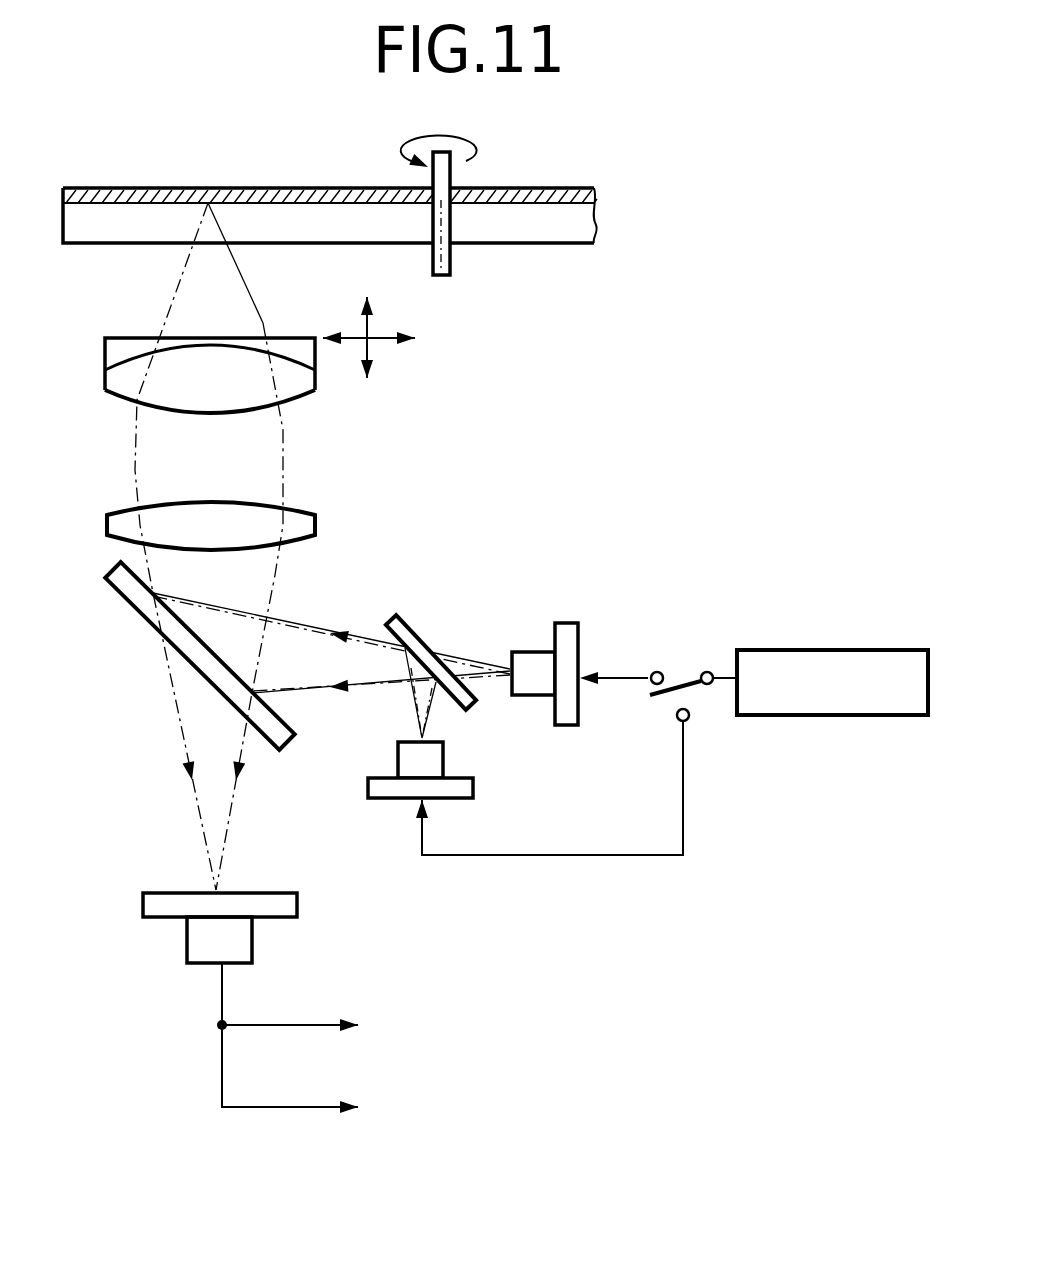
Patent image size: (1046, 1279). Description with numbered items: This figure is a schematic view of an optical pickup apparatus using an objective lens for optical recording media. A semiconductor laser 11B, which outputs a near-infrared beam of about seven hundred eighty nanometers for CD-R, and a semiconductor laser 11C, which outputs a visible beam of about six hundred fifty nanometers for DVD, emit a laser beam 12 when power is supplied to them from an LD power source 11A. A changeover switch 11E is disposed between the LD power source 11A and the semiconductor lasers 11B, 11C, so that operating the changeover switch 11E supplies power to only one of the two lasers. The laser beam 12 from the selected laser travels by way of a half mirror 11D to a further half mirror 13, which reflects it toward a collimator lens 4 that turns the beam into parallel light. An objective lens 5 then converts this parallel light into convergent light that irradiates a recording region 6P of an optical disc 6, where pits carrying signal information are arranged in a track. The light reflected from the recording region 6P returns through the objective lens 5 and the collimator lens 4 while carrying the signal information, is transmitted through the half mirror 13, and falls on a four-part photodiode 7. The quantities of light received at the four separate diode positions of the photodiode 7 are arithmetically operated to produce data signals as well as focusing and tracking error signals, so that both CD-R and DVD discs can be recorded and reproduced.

The optical disc 6 is at (108, 227).
The recording region 6P is at (128, 192).
The objective lens 5 is at (105, 357).
The collimator lens 4 is at (305, 518).
The half mirror 13 is at (133, 593).
The laser beam 12 is at (300, 622).
The half mirror 11D is at (403, 617).
The semiconductor laser 11B is at (533, 650).
The semiconductor laser 11C is at (443, 757).
The changeover switch 11E is at (678, 682).
The LD power source 11A is at (818, 648).
The four-part photodiode 7 is at (268, 892).